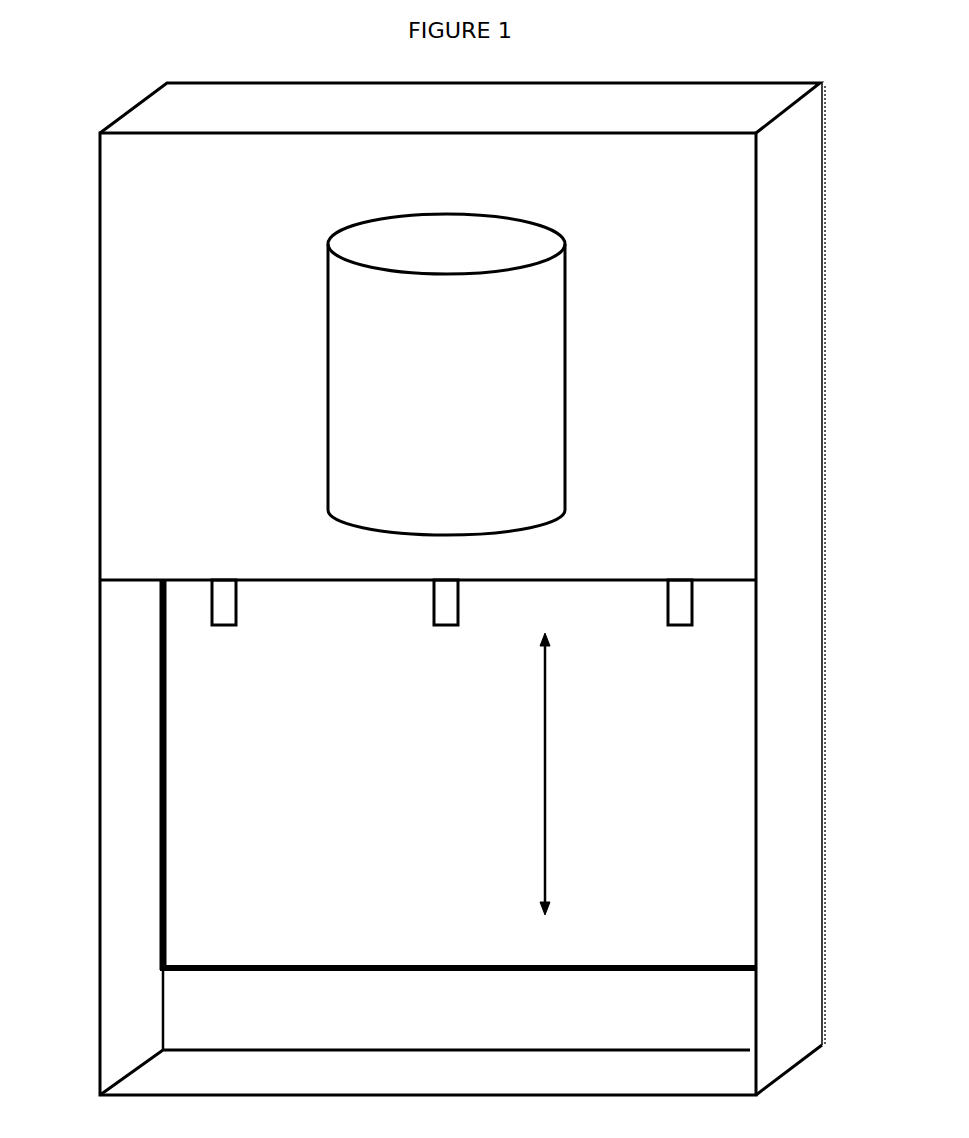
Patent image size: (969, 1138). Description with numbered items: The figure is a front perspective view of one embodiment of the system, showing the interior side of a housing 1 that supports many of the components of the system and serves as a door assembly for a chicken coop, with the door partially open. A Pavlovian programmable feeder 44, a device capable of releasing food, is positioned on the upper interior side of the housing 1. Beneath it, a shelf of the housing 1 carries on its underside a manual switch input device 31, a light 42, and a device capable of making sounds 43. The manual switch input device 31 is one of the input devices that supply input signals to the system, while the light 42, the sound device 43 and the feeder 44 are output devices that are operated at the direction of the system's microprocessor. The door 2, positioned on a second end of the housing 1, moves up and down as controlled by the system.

The housing 1 is at (203, 217).
The door 2 is at (218, 848).
The Pavlovian programmable feeder 44 is at (400, 375).
The manual switch input device 31 is at (225, 600).
The light 42 is at (444, 602).
The device capable of making sounds 43 is at (680, 600).